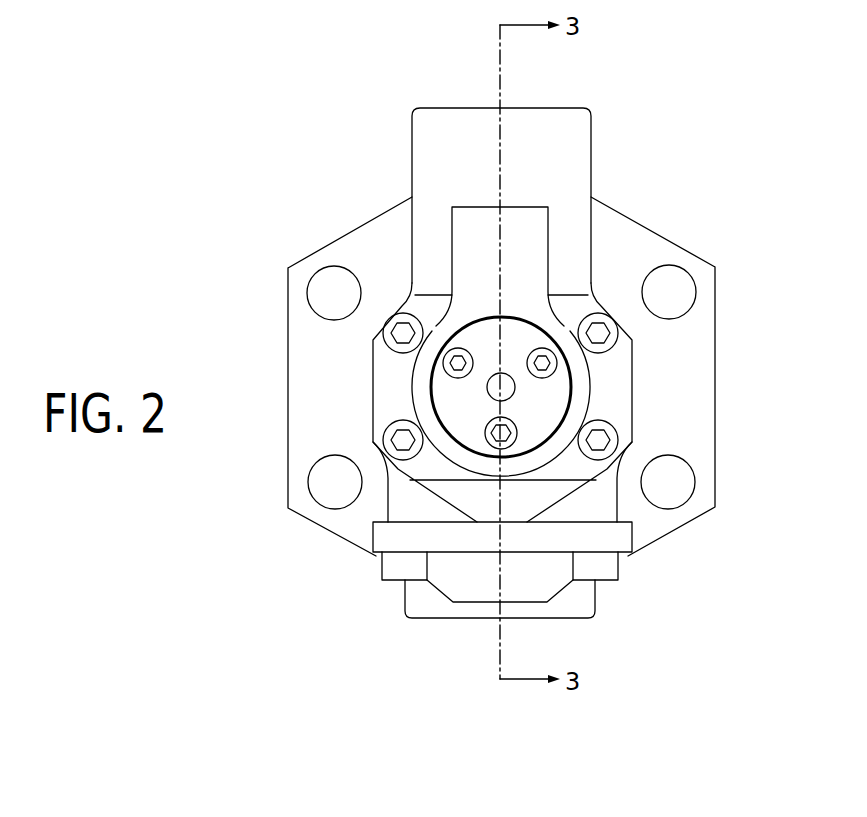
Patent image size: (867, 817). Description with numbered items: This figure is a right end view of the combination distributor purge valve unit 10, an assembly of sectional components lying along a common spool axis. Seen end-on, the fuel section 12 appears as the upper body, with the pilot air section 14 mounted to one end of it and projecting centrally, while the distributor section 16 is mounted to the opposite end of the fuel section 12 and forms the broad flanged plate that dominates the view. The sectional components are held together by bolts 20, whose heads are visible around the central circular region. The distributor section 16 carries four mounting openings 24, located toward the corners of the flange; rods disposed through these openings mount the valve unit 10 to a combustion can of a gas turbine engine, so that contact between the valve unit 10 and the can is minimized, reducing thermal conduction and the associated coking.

The combination distributor purge valve unit 10 is at (720, 150).
The fuel section 12 is at (603, 150).
The pilot air section 14 is at (556, 252).
The distributor section 16 is at (698, 378).
The bolts 20 is at (392, 434).
The mounting openings 24 is at (332, 266).